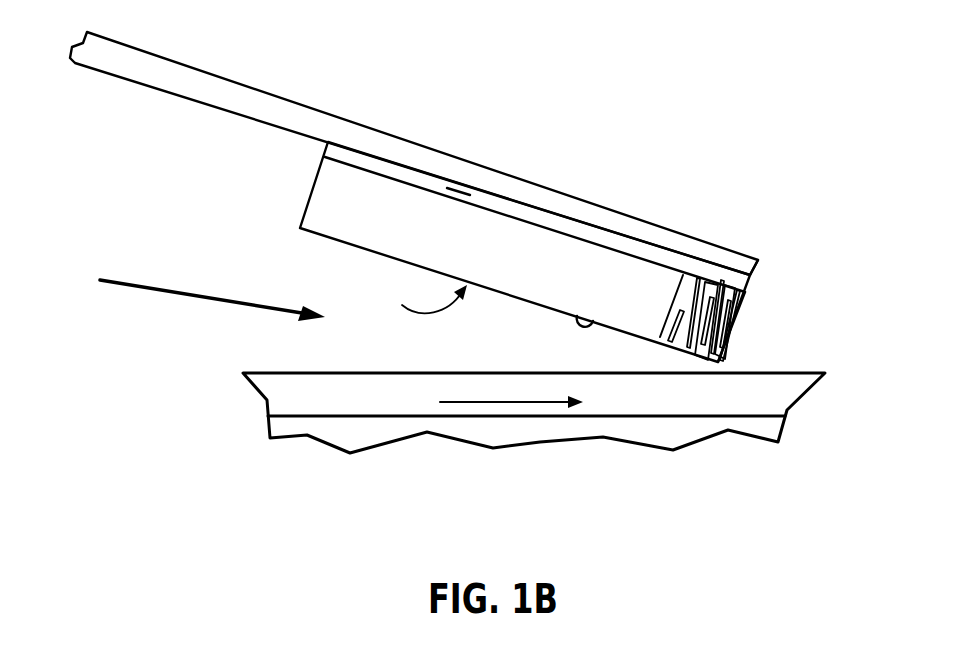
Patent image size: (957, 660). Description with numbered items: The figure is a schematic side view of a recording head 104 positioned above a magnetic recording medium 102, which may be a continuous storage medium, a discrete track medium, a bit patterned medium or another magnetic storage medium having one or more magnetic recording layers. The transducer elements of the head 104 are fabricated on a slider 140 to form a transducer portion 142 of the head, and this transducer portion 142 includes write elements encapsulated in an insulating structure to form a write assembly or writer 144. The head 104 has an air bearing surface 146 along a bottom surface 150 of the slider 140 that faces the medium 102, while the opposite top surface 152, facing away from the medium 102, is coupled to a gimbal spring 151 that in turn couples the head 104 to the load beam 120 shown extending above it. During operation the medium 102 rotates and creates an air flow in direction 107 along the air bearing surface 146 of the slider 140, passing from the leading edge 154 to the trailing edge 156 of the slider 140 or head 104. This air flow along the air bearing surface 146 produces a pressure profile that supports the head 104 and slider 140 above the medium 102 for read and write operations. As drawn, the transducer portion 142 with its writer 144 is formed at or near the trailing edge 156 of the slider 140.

The medium 102 is at (757, 408).
The head 104 is at (755, 243).
The air flow direction 107 is at (512, 401).
The load beam 120 is at (348, 132).
The slider 140 is at (498, 241).
The transducer portion 142 is at (760, 294).
The writer 144 is at (731, 265).
The air bearing surface 146 is at (415, 298).
The bottom surface 150 is at (592, 320).
The gimbal spring 151 is at (460, 190).
The top surface 152 is at (600, 238).
The leading edge 154 is at (307, 207).
The trailing edge 156 is at (742, 315).